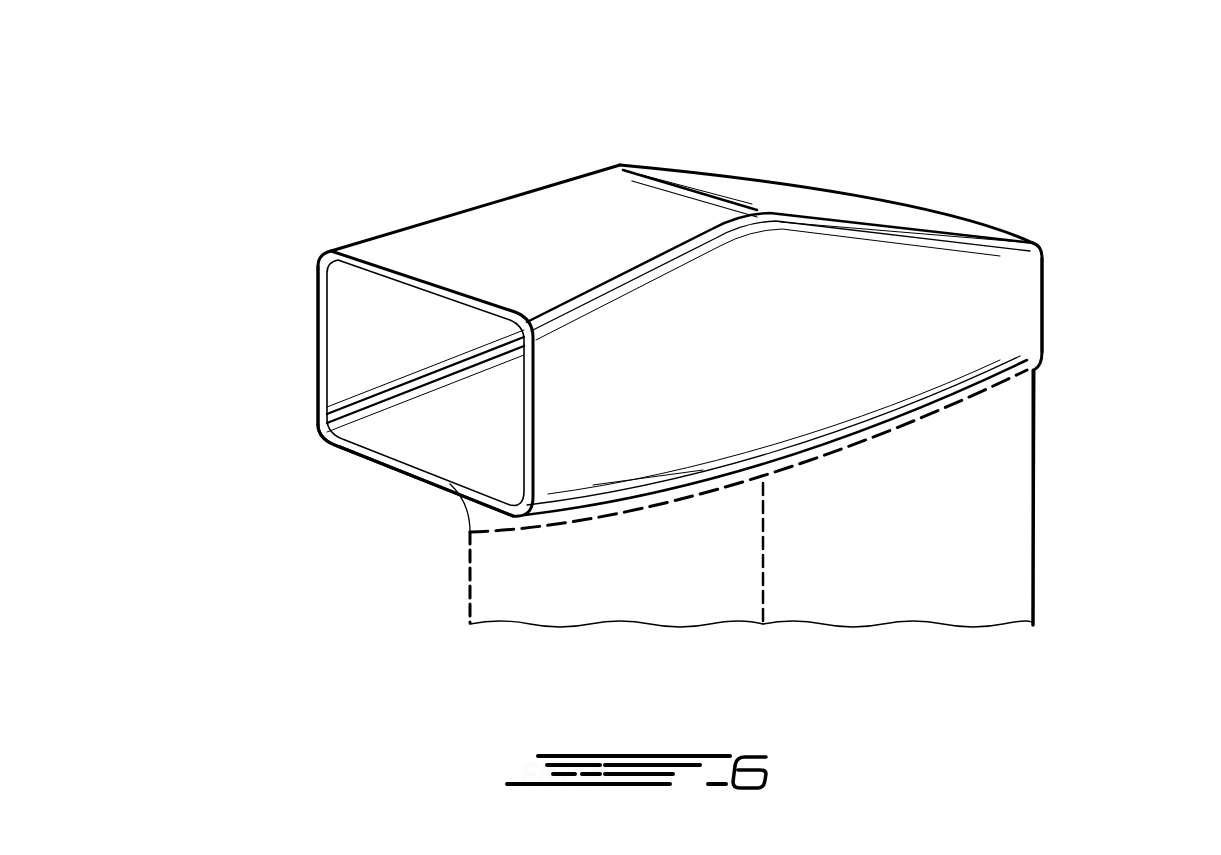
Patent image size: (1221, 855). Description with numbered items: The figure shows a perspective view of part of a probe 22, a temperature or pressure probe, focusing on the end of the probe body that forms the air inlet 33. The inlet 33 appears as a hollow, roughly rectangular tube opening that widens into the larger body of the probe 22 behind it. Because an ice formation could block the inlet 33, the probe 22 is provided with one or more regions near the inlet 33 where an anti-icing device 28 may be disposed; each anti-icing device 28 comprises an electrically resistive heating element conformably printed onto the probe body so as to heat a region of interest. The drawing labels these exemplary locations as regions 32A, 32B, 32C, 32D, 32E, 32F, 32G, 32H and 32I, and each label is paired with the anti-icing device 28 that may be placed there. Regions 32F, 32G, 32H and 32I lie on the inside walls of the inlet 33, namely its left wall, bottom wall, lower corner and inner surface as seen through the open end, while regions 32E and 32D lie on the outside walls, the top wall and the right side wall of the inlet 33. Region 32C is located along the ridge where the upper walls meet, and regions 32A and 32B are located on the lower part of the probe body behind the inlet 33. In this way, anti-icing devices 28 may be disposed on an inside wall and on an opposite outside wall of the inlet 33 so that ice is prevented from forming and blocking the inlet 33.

The probe 22 is at (318, 155).
The anti-icing device 28 is at (783, 395).
The inlet 33 is at (372, 315).
The region 32A is at (650, 578).
The region 32B is at (937, 568).
The region 32C is at (797, 200).
The region 32D is at (897, 285).
The region 32E is at (540, 218).
The region 32F is at (367, 357).
The region 32G is at (503, 463).
The region 32H is at (428, 343).
The region 32I is at (497, 403).